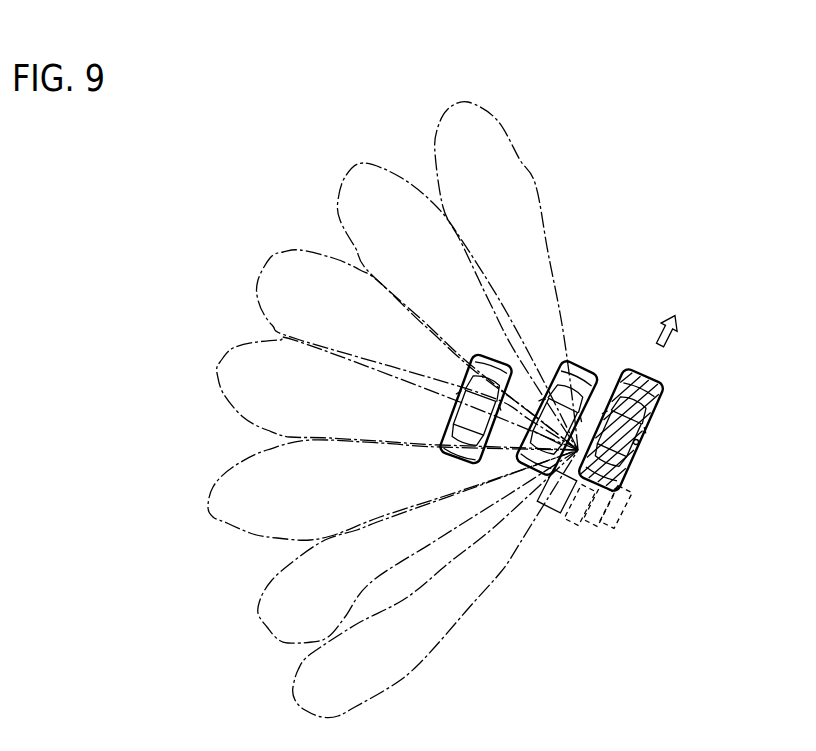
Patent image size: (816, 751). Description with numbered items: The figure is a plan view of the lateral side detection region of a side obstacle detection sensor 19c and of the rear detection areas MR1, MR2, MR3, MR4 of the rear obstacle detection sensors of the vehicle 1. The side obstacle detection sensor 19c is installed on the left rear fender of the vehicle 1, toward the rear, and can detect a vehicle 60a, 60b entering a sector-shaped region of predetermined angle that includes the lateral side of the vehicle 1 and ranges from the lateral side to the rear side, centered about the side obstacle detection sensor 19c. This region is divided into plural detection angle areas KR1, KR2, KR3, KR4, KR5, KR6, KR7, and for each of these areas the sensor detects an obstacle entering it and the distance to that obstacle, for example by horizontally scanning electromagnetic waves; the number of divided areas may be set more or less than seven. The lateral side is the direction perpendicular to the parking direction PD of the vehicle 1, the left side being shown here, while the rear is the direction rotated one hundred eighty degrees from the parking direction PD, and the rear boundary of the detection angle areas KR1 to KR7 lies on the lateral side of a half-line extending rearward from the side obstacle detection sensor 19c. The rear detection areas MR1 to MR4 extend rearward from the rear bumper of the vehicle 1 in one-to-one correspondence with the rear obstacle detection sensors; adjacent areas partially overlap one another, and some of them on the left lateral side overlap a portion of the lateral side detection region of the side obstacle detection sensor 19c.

The detection angle area KR1 is at (482, 99).
The detection angle area KR2 is at (363, 162).
The detection angle area KR3 is at (289, 249).
The detection angle area KR4 is at (218, 372).
The detection angle area KR5 is at (227, 523).
The detection angle area KR6 is at (283, 642).
The detection angle area KR7 is at (296, 706).
The vehicle 60a is at (586, 363).
The vehicle 60b is at (518, 360).
The vehicle 1 is at (667, 386).
The side obstacle detection sensor 19c is at (637, 443).
The parking direction PD is at (683, 333).
The rear detection area MR1 is at (535, 510).
The rear detection area MR2 is at (562, 518).
The rear detection area MR3 is at (588, 528).
The rear detection area MR4 is at (626, 526).